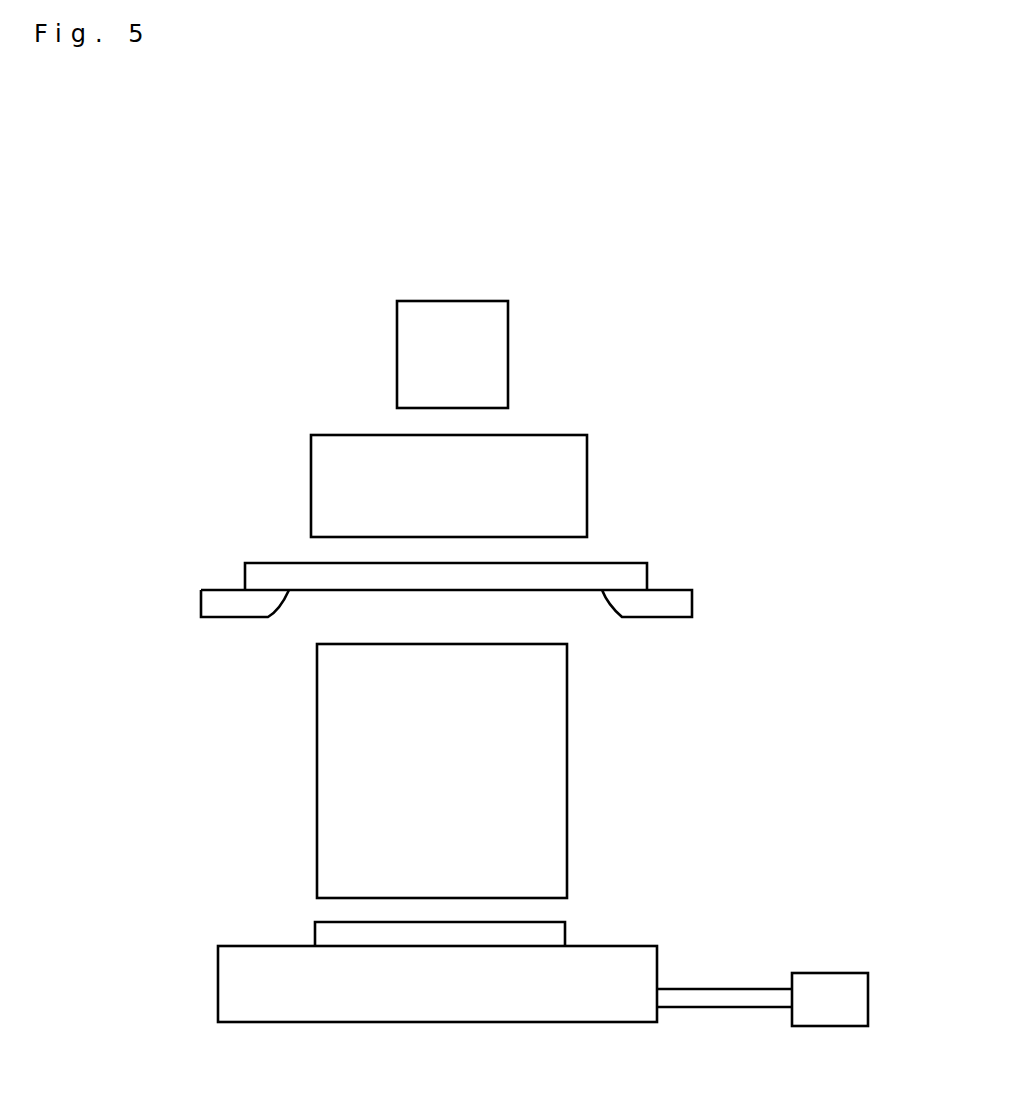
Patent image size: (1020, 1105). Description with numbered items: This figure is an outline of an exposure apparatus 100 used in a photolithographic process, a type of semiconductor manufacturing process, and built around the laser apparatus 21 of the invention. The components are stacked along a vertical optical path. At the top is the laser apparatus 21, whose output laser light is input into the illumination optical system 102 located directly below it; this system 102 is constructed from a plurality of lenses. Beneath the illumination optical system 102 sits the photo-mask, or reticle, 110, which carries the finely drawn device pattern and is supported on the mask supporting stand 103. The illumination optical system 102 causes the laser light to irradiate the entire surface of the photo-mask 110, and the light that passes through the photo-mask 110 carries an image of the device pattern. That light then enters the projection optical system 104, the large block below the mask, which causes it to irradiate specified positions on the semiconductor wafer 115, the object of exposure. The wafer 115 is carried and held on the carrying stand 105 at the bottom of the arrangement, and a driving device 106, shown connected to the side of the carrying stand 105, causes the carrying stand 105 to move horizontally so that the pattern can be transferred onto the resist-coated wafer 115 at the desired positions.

The exposure apparatus 100 is at (722, 369).
The laser apparatus 21 is at (500, 352).
The illumination optical system 102 is at (578, 493).
The photo-mask (reticle) 110 is at (639, 575).
The mask supporting stand 103 is at (682, 601).
The projection optical system 104 is at (558, 737).
The semiconductor wafer 115 is at (558, 932).
The carrying stand 105 is at (643, 965).
The driving device 106 is at (848, 970).